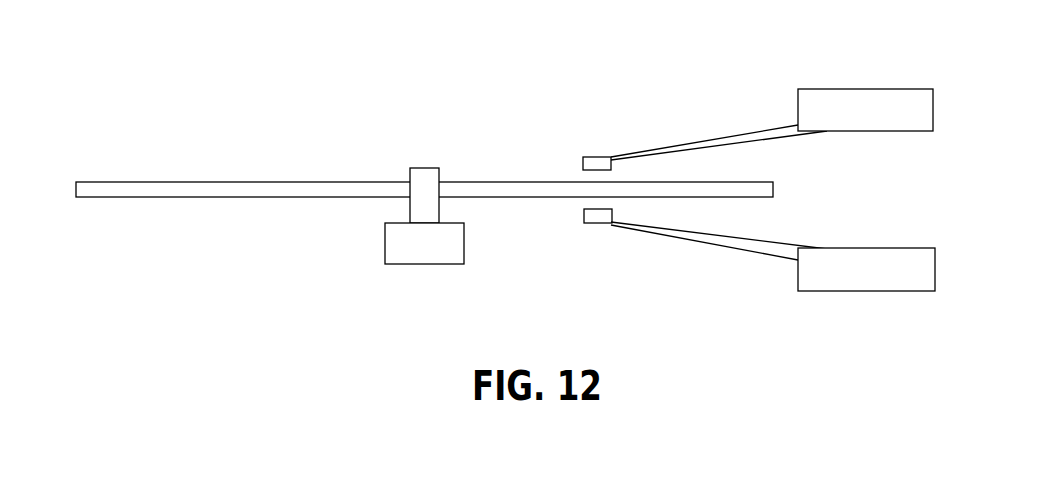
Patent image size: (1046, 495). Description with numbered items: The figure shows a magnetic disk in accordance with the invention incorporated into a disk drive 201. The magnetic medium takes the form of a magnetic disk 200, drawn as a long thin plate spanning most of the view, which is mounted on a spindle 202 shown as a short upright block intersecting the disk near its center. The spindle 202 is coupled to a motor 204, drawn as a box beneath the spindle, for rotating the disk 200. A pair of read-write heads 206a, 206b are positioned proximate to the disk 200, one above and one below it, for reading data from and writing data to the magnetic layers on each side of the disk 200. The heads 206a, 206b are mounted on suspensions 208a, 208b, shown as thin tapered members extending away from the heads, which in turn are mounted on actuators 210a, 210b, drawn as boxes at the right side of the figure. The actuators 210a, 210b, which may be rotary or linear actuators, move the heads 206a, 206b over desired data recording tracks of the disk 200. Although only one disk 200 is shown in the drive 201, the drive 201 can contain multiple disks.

The magnetic disk 200 is at (138, 182).
The disk drive 201 is at (332, 145).
The spindle 202 is at (426, 168).
The motor 204 is at (442, 255).
The read-write head 206a is at (590, 157).
The read-write head 206b is at (594, 223).
The suspension 208a is at (733, 133).
The suspension 208b is at (722, 247).
The actuator 210a is at (857, 124).
The actuator 210b is at (857, 283).